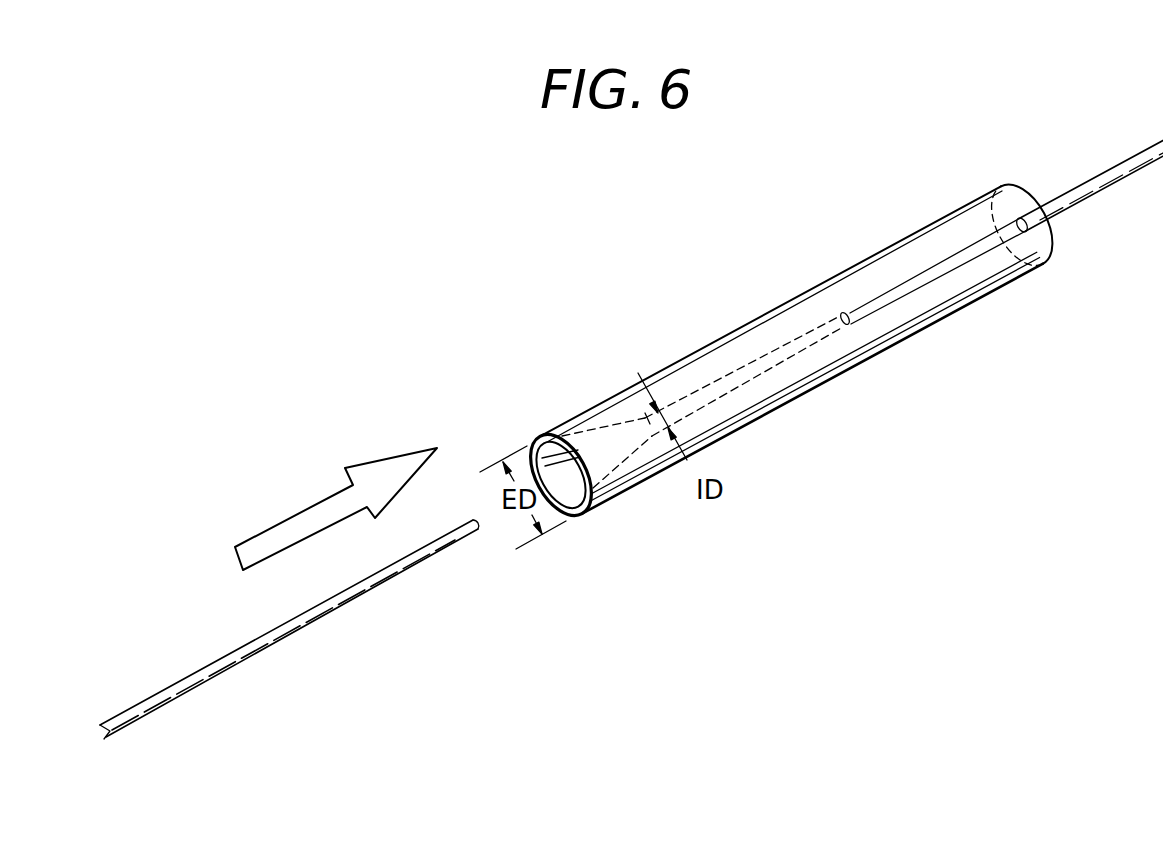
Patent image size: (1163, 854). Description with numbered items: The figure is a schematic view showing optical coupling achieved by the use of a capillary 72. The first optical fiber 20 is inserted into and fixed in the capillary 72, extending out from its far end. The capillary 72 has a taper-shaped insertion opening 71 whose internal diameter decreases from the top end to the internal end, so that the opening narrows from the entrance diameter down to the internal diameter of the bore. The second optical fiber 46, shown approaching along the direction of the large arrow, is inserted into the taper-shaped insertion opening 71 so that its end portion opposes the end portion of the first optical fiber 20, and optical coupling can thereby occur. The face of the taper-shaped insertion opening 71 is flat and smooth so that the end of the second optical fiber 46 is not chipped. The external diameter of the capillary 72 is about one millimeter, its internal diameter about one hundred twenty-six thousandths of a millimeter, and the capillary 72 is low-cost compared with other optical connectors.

The first optical fiber 20 is at (1090, 180).
The second optical fiber 46 is at (330, 611).
The taper-shaped insertion opening 71 is at (539, 456).
The capillary 72 is at (789, 401).